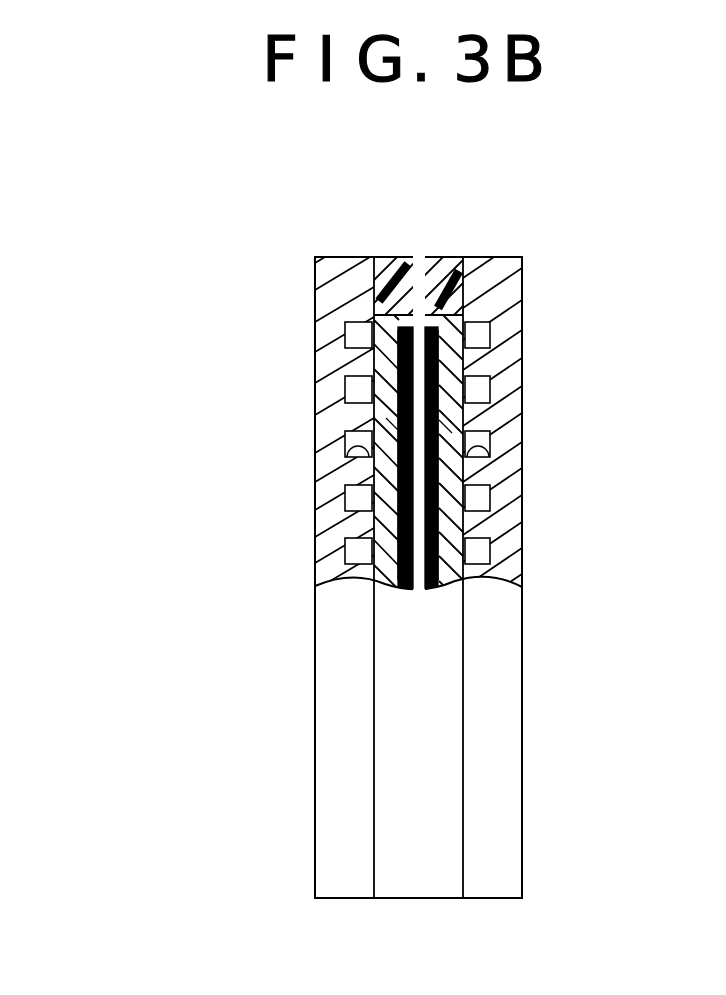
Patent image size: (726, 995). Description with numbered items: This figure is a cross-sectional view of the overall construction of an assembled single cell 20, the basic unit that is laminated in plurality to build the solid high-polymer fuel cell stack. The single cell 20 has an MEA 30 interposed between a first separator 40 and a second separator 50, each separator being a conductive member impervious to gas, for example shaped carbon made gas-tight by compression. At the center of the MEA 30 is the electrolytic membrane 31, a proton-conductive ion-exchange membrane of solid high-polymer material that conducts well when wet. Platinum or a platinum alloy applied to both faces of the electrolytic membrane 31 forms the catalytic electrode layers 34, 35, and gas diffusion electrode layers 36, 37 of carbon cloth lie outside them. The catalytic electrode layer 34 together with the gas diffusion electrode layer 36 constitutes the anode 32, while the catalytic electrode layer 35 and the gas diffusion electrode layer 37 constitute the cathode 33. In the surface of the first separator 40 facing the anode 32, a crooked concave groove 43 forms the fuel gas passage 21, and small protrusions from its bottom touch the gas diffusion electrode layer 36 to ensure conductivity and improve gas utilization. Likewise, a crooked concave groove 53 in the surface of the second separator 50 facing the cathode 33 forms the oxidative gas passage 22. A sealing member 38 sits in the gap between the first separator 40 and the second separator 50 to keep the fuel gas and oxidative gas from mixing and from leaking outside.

The single cell 20 is at (516, 229).
The fuel gas passage 21 is at (347, 488).
The oxidative gas passage 22 is at (473, 497).
The MEA 30 is at (380, 366).
The electrolytic membrane 31 is at (417, 295).
The anode 32 is at (188, 378).
The cathode 33 is at (650, 377).
The catalytic electrode layer 34 is at (398, 391).
The catalytic electrode layer 35 is at (450, 390).
The gas diffusion electrode layer 36 is at (387, 420).
The gas diffusion electrode layer 37 is at (448, 421).
The sealing member 38 is at (393, 257).
The first separator 40 is at (335, 257).
The concave groove 43 is at (348, 458).
The second separator 50 is at (513, 296).
The concave groove 53 is at (488, 458).